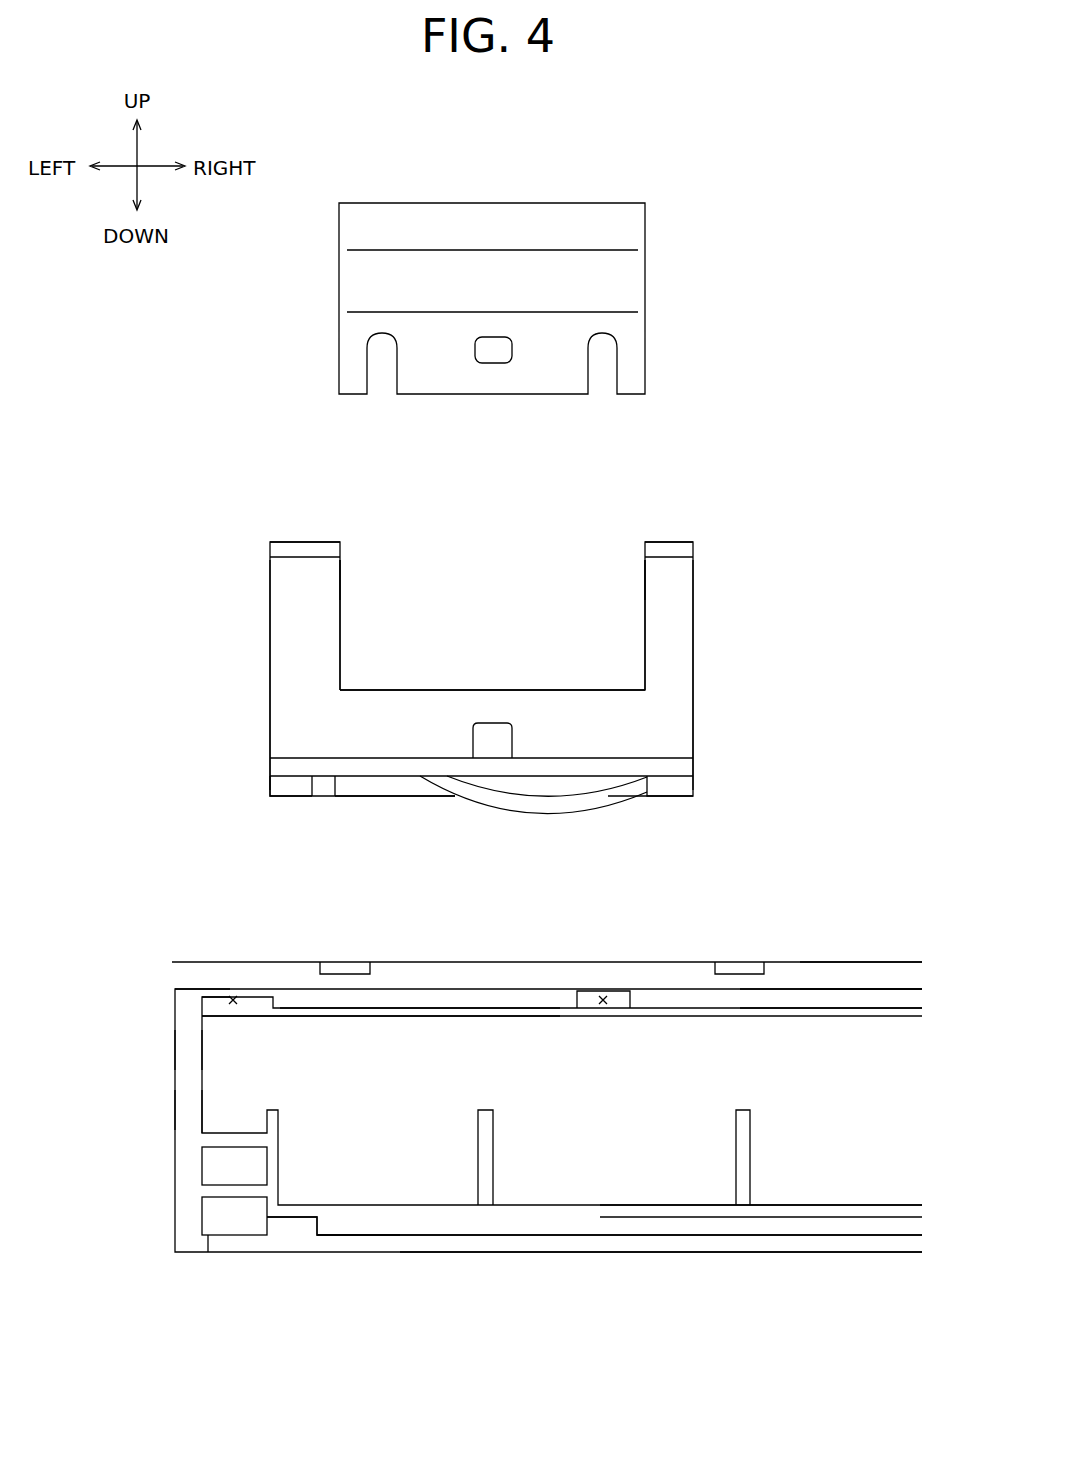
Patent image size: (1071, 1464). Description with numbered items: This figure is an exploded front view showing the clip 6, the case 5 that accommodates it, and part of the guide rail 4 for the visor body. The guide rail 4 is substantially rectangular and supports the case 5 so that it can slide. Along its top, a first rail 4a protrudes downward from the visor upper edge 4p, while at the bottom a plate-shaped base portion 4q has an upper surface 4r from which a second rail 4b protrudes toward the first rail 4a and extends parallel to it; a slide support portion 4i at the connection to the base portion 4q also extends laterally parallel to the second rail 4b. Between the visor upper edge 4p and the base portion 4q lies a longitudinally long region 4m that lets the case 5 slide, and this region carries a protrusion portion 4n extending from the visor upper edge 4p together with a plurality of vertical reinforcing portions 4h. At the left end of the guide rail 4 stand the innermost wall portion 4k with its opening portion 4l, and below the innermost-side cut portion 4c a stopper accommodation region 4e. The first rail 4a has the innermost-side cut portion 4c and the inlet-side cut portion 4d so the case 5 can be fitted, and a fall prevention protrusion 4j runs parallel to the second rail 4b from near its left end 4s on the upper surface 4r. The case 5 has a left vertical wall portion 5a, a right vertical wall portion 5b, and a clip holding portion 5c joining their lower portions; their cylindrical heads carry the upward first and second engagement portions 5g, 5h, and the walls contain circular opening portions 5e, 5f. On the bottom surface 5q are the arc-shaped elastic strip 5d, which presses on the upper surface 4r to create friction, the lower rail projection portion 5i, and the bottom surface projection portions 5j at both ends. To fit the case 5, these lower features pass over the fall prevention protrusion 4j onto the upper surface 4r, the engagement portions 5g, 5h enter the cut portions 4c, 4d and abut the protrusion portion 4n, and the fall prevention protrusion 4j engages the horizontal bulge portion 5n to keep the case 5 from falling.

The guide rail 4 is at (572, 1256).
The first rail 4a is at (837, 997).
The second rail 4b is at (435, 1226).
The innermost-side cut portion 4c is at (233, 996).
The inlet-side cut portion 4d is at (603, 996).
The stopper accommodation region 4e is at (228, 1106).
The vertical reinforcing portions 4h is at (745, 1140).
The slide support portion 4i is at (805, 1208).
The fall prevention protrusion 4j is at (291, 1226).
The innermost wall portion 4k is at (190, 1016).
The opening portion 4l is at (190, 1048).
The region 4m is at (558, 1157).
The protrusion portion 4n is at (375, 1017).
The visor upper edge 4p is at (892, 975).
The base portion 4q is at (665, 1243).
The upper surface 4r is at (724, 1235).
The left end 4s is at (267, 1221).
The case 5 is at (712, 671).
The left vertical wall portion 5a is at (300, 604).
The right vertical wall portion 5b is at (667, 620).
The clip holding portion 5c is at (405, 716).
The elastic strip 5d is at (568, 800).
The opening portion 5e is at (300, 570).
The opening portion 5f is at (667, 586).
The first engagement portion 5g is at (300, 548).
The second engagement portion 5h is at (667, 548).
The lower rail projection portion 5i is at (380, 796).
The bottom surface projection portions 5j is at (288, 788).
The horizontal bulge portion 5n is at (300, 766).
The bottom surface 5q is at (333, 796).
The clip 6 is at (668, 257).